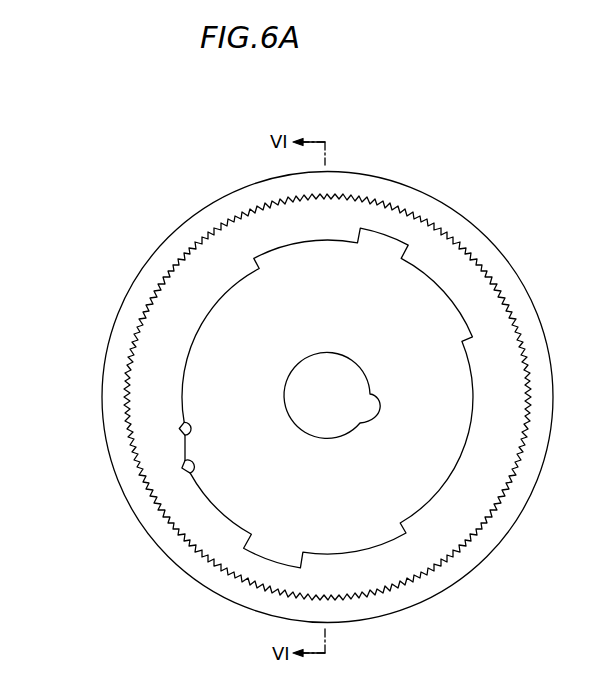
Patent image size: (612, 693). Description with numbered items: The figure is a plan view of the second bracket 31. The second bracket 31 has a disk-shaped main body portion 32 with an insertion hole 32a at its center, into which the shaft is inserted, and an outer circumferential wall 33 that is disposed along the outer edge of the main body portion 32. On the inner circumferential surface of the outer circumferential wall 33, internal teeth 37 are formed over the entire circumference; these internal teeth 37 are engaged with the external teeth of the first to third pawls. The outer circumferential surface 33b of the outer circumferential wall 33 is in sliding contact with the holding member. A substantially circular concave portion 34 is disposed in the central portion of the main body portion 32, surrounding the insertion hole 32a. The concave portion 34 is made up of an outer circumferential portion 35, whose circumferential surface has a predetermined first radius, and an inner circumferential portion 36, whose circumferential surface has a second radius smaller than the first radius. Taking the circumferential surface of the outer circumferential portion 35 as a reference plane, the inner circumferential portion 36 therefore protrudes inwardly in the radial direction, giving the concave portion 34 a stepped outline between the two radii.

The second bracket 31 is at (412, 174).
The main body portion 32 is at (448, 257).
The insertion hole 32a is at (348, 361).
The outer circumferential wall 33 is at (500, 270).
The outer circumferential surface 33b is at (547, 343).
The concave portion 34 is at (58, 441).
The outer circumferential portion 35 is at (185, 463).
The inner circumferential portion 36 is at (186, 428).
The internal teeth 37 is at (517, 451).